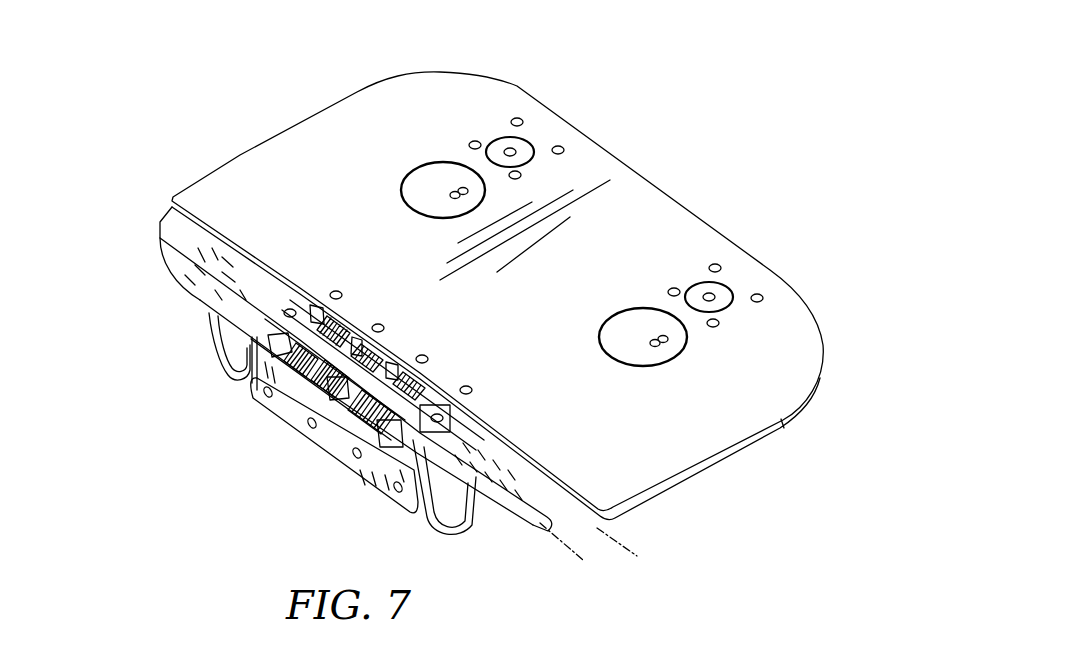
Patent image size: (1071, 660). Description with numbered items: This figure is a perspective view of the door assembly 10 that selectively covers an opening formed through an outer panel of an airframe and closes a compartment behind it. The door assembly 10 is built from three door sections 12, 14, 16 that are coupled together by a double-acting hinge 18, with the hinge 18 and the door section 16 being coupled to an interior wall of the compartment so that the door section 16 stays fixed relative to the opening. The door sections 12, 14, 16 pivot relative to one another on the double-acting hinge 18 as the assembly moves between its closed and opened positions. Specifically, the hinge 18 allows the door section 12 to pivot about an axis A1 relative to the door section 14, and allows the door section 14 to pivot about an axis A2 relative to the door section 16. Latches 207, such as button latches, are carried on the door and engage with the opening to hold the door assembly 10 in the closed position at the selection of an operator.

The door assembly 10 is at (150, 133).
The door section 12 is at (308, 140).
The door section 14 is at (152, 220).
The door section 16 is at (198, 313).
The double-acting hinge 18 is at (306, 388).
The latches 207 is at (435, 158).
The axis A1 is at (637, 556).
The axis A2 is at (575, 553).